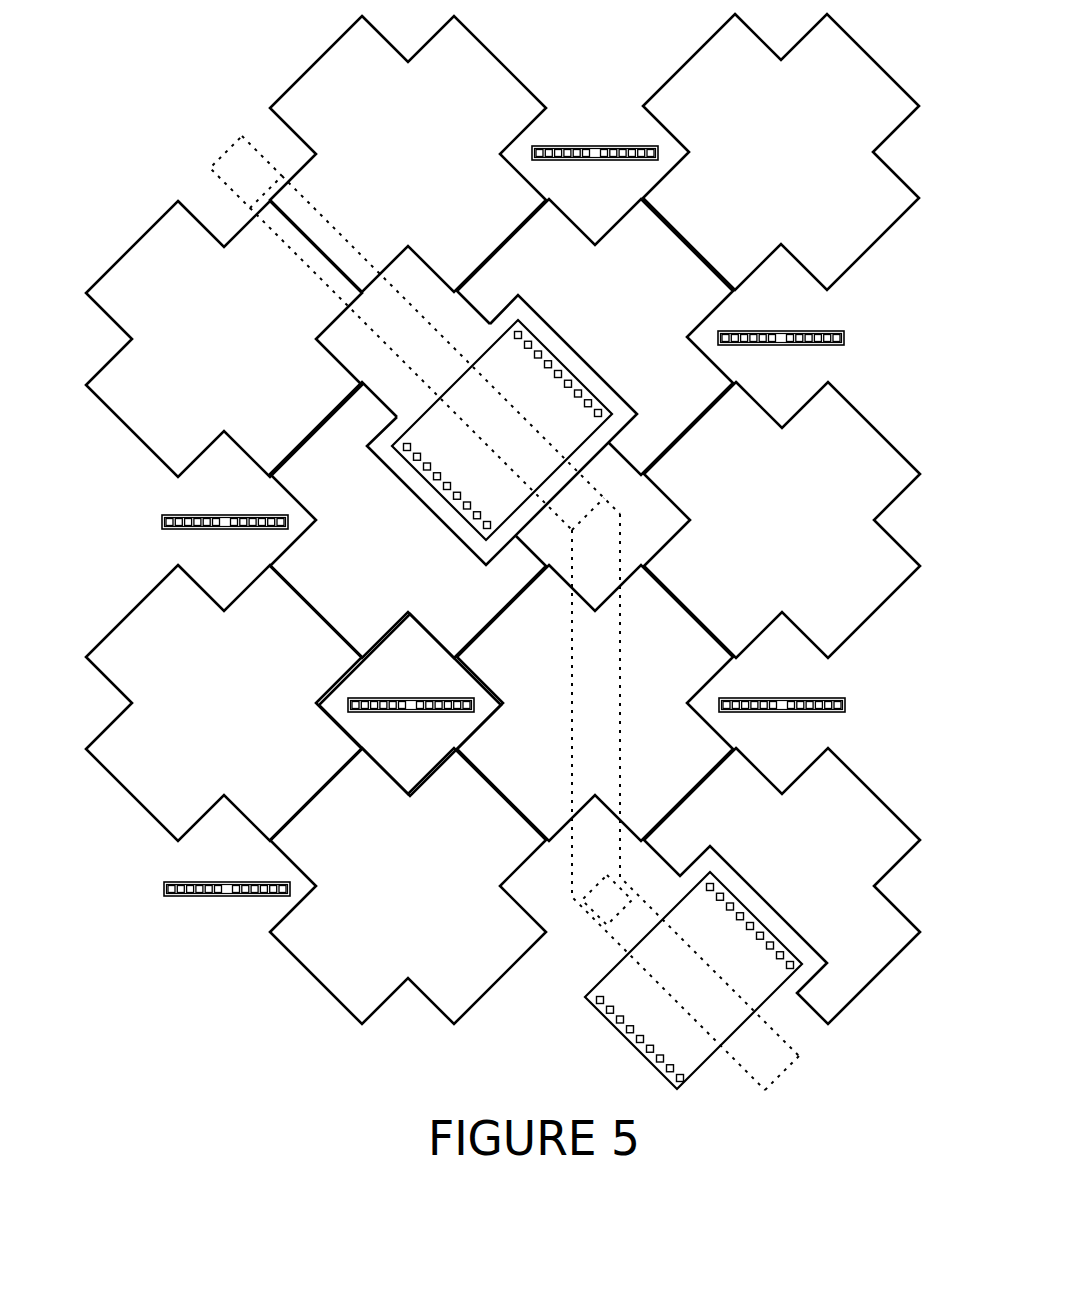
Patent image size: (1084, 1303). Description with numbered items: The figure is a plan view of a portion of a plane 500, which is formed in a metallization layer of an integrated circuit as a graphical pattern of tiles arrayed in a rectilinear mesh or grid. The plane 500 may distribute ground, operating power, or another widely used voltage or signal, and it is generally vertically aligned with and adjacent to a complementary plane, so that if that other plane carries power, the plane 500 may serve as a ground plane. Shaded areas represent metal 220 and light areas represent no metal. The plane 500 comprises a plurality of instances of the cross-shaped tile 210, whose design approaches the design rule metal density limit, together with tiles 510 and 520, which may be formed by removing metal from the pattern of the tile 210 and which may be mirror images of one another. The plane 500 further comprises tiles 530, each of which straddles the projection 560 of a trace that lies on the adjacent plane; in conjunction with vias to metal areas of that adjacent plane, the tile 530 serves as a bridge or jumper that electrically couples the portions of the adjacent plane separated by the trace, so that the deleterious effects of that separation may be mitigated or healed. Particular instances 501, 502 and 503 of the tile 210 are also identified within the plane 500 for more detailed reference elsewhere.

The plane 500 is at (585, 22).
The tile 210 is at (415, 169).
The metal 220 is at (820, 527).
The tile 510 is at (653, 312).
The tile 520 is at (417, 567).
The tile 530 is at (540, 448).
The instance of tile 210 501 is at (700, 771).
The instance of tile 210 502 is at (422, 237).
The instance of tile 210 503 is at (272, 294).
The projection of trace 560 is at (778, 1052).